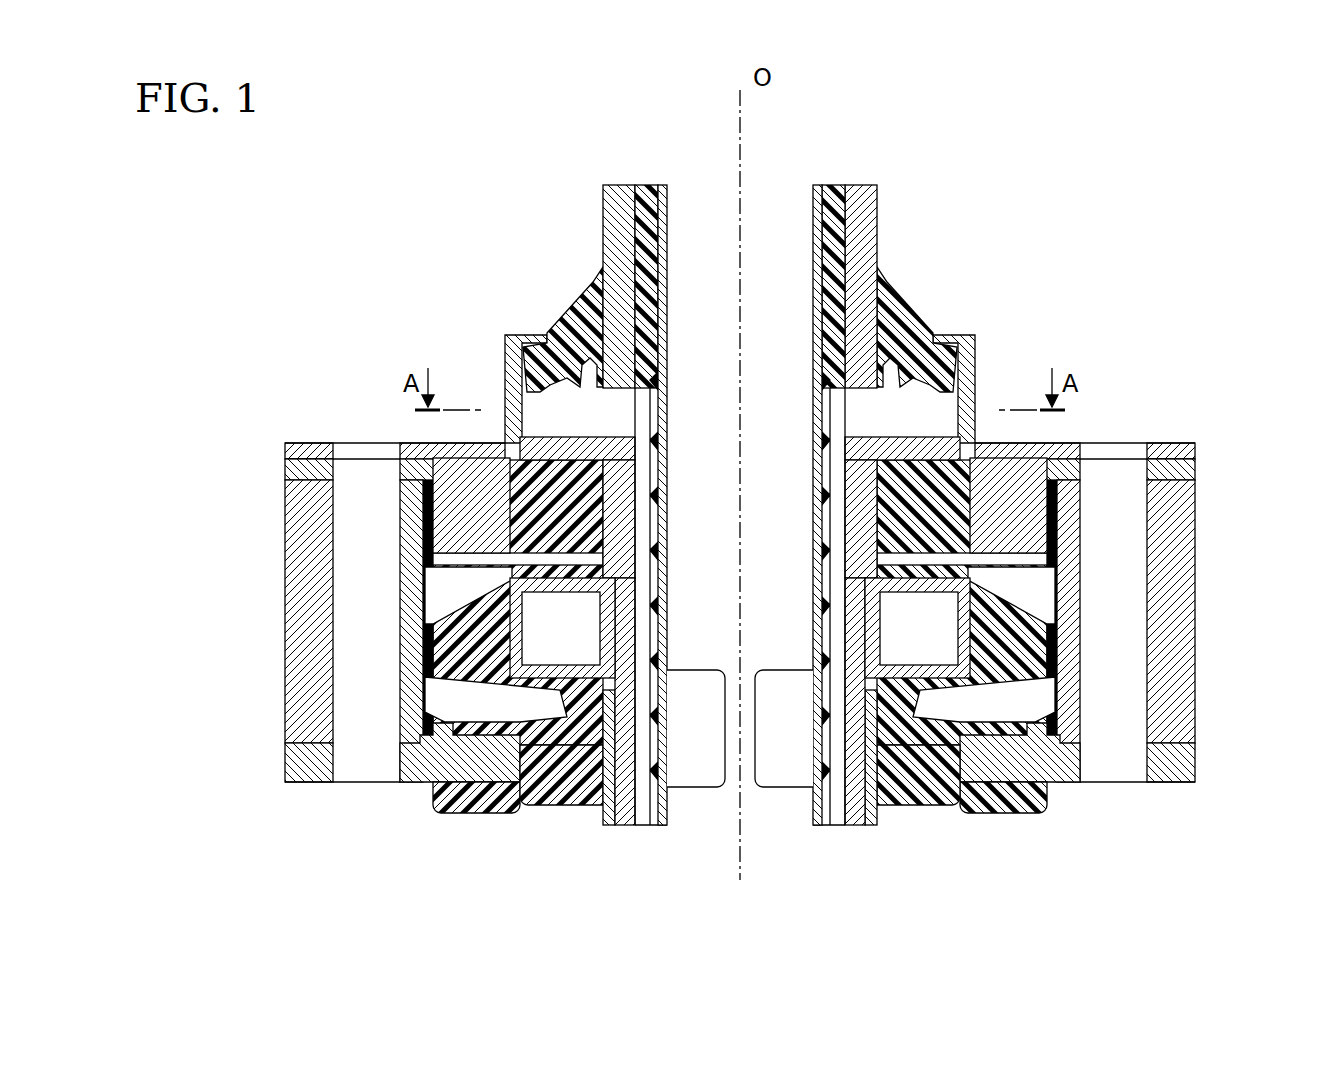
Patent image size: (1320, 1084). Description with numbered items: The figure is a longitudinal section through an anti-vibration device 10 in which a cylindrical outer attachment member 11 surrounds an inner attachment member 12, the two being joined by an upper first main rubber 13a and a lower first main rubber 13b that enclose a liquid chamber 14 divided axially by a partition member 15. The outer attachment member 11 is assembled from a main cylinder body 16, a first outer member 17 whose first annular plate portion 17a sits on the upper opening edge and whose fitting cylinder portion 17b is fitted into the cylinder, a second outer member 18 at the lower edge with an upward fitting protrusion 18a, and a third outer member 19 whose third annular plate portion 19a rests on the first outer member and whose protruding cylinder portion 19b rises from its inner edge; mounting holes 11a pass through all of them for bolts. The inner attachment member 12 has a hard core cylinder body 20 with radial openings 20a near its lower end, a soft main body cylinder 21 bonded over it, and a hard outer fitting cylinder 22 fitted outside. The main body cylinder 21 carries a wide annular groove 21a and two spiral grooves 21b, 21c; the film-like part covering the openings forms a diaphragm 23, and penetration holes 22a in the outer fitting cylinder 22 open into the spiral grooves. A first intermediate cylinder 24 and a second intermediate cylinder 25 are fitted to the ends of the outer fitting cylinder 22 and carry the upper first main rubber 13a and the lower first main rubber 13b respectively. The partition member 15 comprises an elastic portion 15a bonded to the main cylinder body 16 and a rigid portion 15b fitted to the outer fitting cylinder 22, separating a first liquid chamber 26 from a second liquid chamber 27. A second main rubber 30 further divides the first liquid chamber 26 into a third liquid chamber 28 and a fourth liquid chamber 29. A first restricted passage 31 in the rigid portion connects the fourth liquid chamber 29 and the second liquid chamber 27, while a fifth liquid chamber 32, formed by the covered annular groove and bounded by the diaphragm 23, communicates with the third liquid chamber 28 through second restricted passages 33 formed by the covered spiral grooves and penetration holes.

The anti-vibration device 10 is at (1195, 205).
The outer attachment member 11 is at (170, 442).
The mounting holes 11a is at (361, 782).
The inner attachment member 12 is at (950, 100).
The upper first main rubber 13a is at (582, 340).
The lower first main rubber 13b is at (550, 790).
The liquid chamber 14 is at (560, 372).
The partition member 15 is at (1272, 625).
The elastic portion 15a is at (1010, 603).
The rigid portion 15b is at (955, 702).
The main cylinder body 16 is at (285, 612).
The first outer member 17 is at (215, 490).
The first annular plate portion 17a is at (415, 501).
The fitting cylinder portion 17b is at (317, 482).
The second outer member 18 is at (285, 765).
The fitting protrusion 18a is at (427, 738).
The third outer member 19 is at (285, 447).
The third annular plate portion 19a is at (1068, 442).
The protruding cylinder portion 19b is at (507, 370).
The core cylinder body 20 is at (823, 210).
The openings 20a is at (691, 787).
The main body cylinder 21 is at (845, 222).
The annular groove 21a is at (643, 732).
The spiral groove 21b is at (832, 410).
The spiral groove 21c is at (650, 408).
The outer fitting cylinder 22 is at (862, 232).
The penetration holes 22a is at (597, 408).
The diaphragm 23 is at (657, 770).
The first intermediate cylinder 24 is at (603, 218).
The second intermediate cylinder 25 is at (590, 748).
The first liquid chamber 26 is at (918, 372).
The second liquid chamber 27 is at (995, 790).
The third liquid chamber 28 is at (945, 430).
The fourth liquid chamber 29 is at (1050, 575).
The second main rubber 30 is at (547, 477).
The first restricted passage 31 is at (985, 553).
The fifth liquid chamber 32 is at (845, 740).
The second restricted passage 33 is at (600, 403).